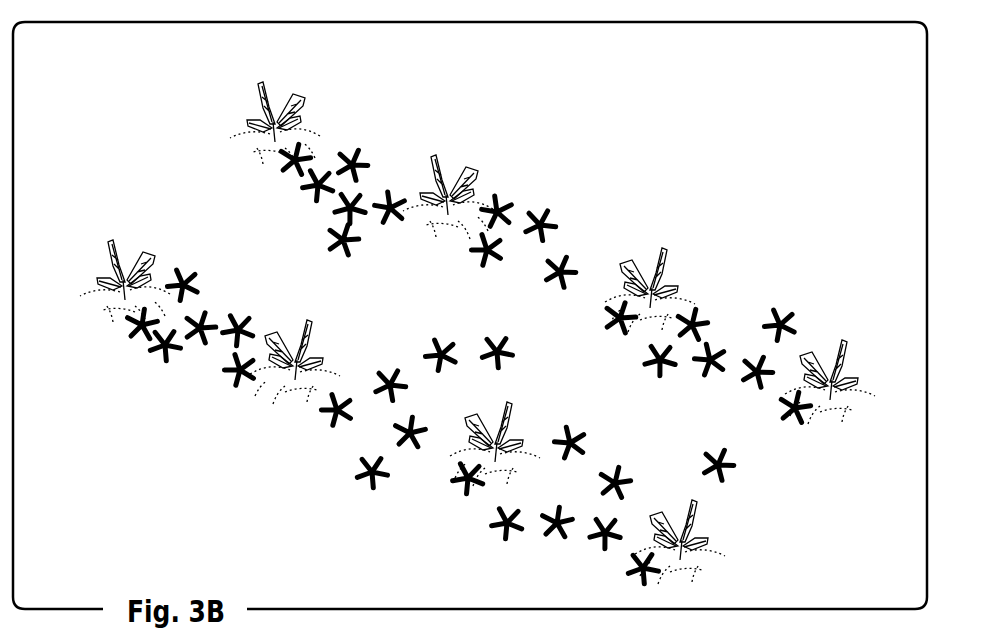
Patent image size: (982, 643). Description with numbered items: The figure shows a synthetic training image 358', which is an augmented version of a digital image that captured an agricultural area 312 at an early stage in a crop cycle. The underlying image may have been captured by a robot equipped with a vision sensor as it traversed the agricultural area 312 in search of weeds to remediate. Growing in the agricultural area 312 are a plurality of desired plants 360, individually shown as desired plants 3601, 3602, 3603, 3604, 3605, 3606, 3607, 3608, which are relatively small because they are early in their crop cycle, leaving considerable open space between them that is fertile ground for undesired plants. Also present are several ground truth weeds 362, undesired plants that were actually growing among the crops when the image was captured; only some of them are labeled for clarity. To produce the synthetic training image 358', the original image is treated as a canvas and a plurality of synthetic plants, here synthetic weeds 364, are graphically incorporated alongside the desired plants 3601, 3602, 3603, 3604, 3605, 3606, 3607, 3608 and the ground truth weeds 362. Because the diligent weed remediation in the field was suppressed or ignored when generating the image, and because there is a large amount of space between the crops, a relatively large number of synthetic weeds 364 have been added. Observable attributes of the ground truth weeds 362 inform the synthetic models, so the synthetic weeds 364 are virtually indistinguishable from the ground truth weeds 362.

The agricultural area 312 is at (104, 164).
The synthetic training image 358' is at (470, 315).
The desired plants 360 is at (497, 316).
The desired plant 3601 is at (316, 97).
The desired plant 3602 is at (481, 155).
The desired plant 3603 is at (679, 262).
The desired plant 3604 is at (871, 358).
The desired plant 3605 is at (161, 243).
The desired plant 3606 is at (336, 343).
The desired plant 3607 is at (538, 418).
The desired plant 3608 is at (715, 530).
The ground truth weeds 362 is at (352, 163).
The synthetic weeds 364 is at (336, 236).